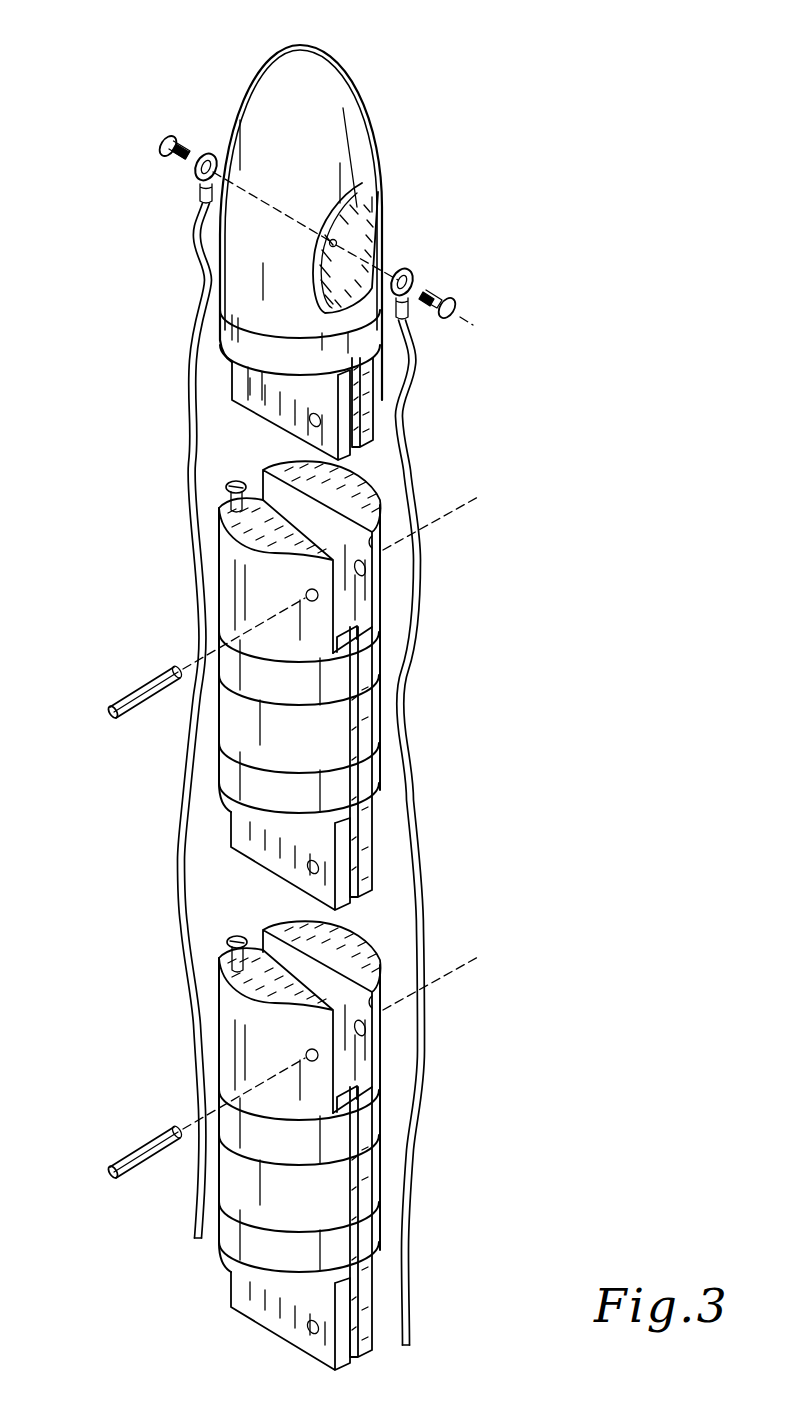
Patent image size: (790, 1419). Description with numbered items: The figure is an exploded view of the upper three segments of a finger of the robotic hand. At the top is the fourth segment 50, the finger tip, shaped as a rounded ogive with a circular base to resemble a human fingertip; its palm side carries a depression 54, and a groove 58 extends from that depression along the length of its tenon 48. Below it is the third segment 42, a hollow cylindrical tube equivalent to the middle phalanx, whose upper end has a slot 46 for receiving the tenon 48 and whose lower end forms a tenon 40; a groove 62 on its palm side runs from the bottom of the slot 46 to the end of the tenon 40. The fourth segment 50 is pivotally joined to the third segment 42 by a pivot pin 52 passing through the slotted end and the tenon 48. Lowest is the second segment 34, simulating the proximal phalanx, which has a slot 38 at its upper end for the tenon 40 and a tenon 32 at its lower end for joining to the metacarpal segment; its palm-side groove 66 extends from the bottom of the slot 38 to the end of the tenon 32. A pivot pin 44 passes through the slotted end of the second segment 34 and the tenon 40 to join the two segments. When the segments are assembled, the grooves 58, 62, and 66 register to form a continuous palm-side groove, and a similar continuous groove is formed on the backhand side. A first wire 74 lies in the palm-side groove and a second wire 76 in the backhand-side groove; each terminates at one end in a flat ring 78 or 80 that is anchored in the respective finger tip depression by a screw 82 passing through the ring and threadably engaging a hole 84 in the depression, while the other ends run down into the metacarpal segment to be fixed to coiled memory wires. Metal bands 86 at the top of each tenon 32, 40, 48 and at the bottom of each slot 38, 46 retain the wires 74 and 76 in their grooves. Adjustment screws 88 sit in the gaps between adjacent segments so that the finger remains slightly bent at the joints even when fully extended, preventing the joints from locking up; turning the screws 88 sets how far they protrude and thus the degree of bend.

The tenon 32 is at (240, 1292).
The second segment 34 is at (257, 1212).
The slot 38 is at (380, 1043).
The tenon 40 is at (240, 834).
The third segment 42 is at (245, 741).
The pivot pin 44 is at (147, 1147).
The slot 46 is at (380, 525).
The tenon 48 is at (237, 390).
The fourth segment 50 is at (350, 78).
The pivot pin 52 is at (152, 685).
The depression 54 is at (375, 227).
The groove 58 is at (353, 403).
The groove 62 is at (360, 720).
The groove 66 is at (357, 1200).
The first wire 74 is at (413, 550).
The second wire 76 is at (187, 507).
The flat ring 78 is at (413, 270).
The flat ring 80 is at (205, 155).
The screw 82 is at (163, 135).
The hole 84 is at (335, 243).
The metal band 86 is at (233, 323).
The adjustment screw 88 is at (228, 477).